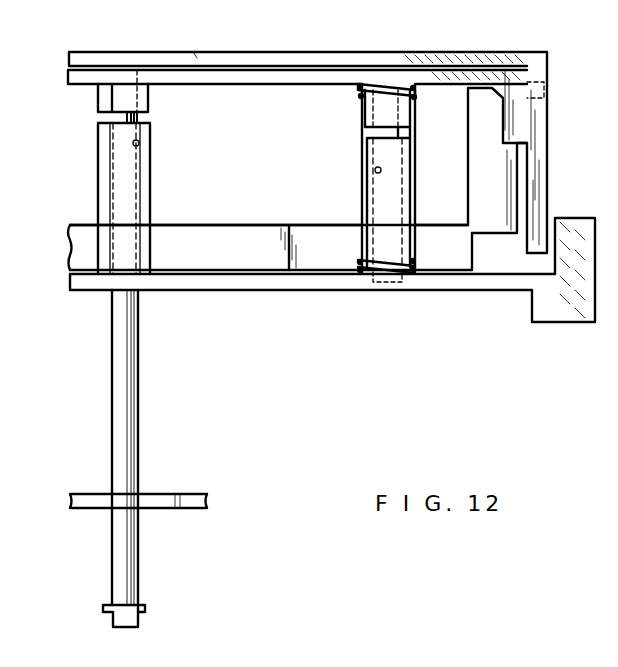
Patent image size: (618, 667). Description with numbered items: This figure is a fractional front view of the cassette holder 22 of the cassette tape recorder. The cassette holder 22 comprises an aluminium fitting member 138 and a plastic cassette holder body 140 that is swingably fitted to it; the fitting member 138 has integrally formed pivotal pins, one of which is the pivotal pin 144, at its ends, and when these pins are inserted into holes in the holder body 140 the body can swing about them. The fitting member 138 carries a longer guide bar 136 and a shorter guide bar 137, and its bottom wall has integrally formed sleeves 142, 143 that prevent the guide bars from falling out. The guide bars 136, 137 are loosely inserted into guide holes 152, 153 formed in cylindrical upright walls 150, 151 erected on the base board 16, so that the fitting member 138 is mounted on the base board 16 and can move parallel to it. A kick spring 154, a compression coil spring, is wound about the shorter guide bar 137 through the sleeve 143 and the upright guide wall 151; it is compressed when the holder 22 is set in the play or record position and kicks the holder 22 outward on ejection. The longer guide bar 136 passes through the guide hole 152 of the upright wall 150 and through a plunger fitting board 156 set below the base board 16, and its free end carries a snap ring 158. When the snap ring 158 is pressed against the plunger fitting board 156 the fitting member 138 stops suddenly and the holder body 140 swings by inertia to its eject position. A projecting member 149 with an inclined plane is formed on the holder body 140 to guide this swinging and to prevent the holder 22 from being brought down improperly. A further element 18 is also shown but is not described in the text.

The base board 16 is at (338, 291).
The frame bar 18 is at (277, 272).
The cassette holder 22 is at (372, 50).
The longer guide bar 136 is at (131, 390).
The shorter guide bar 137 is at (382, 136).
The aluminium fitting member 138 is at (242, 82).
The cassette holder body 140 is at (293, 62).
The sleeve 142 is at (148, 99).
The sleeve 143 is at (370, 115).
The pivotal pin 144 is at (548, 90).
The projecting member 149 is at (549, 160).
The cylindrical upright wall 150 is at (144, 182).
The cylindrical upright wall 151 is at (370, 199).
The guide hole 152 is at (140, 148).
The guide hole 153 is at (374, 168).
The kick spring 154 is at (417, 94).
The plunger fitting board 156 is at (160, 509).
The snap ring 158 is at (143, 606).